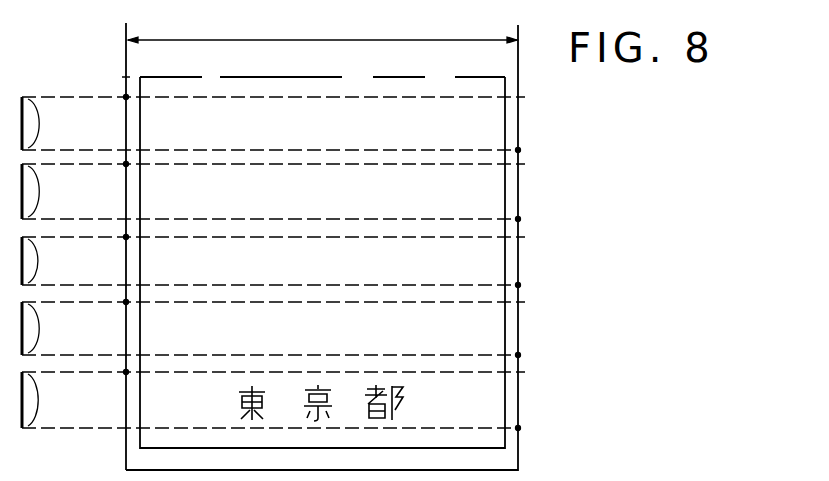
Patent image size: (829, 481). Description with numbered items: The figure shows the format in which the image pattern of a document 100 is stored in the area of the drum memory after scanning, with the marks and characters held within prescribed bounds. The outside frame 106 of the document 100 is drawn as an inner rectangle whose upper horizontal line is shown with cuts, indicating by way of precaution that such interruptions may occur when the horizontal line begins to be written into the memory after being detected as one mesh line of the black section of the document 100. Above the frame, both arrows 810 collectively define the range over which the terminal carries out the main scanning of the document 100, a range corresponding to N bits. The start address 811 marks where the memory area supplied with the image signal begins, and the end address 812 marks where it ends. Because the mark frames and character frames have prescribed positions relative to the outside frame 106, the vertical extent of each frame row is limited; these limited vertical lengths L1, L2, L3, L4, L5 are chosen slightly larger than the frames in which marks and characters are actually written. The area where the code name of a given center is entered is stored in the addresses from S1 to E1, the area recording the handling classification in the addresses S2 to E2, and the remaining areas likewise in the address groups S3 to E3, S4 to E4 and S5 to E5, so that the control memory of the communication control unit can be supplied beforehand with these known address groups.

The document 100 is at (676, 471).
The start address 811 is at (125, 76).
The end address 812 is at (519, 470).
The arrows 810 is at (438, 41).
The outside frame 106 is at (333, 77).
The limited vertical length L1 is at (40, 123).
The limited vertical length L2 is at (40, 191).
The limited vertical length L3 is at (40, 261).
The limited vertical length L4 is at (40, 328).
The limited vertical length L5 is at (40, 400).
The start address S1 is at (125, 96).
The start address S2 is at (126, 164).
The start address S3 is at (126, 237).
The start address S4 is at (126, 302).
The start address S5 is at (126, 372).
The end address E1 is at (518, 150).
The end address E2 is at (518, 219).
The end address E3 is at (518, 285).
The end address E4 is at (518, 355).
The end address E5 is at (518, 428).